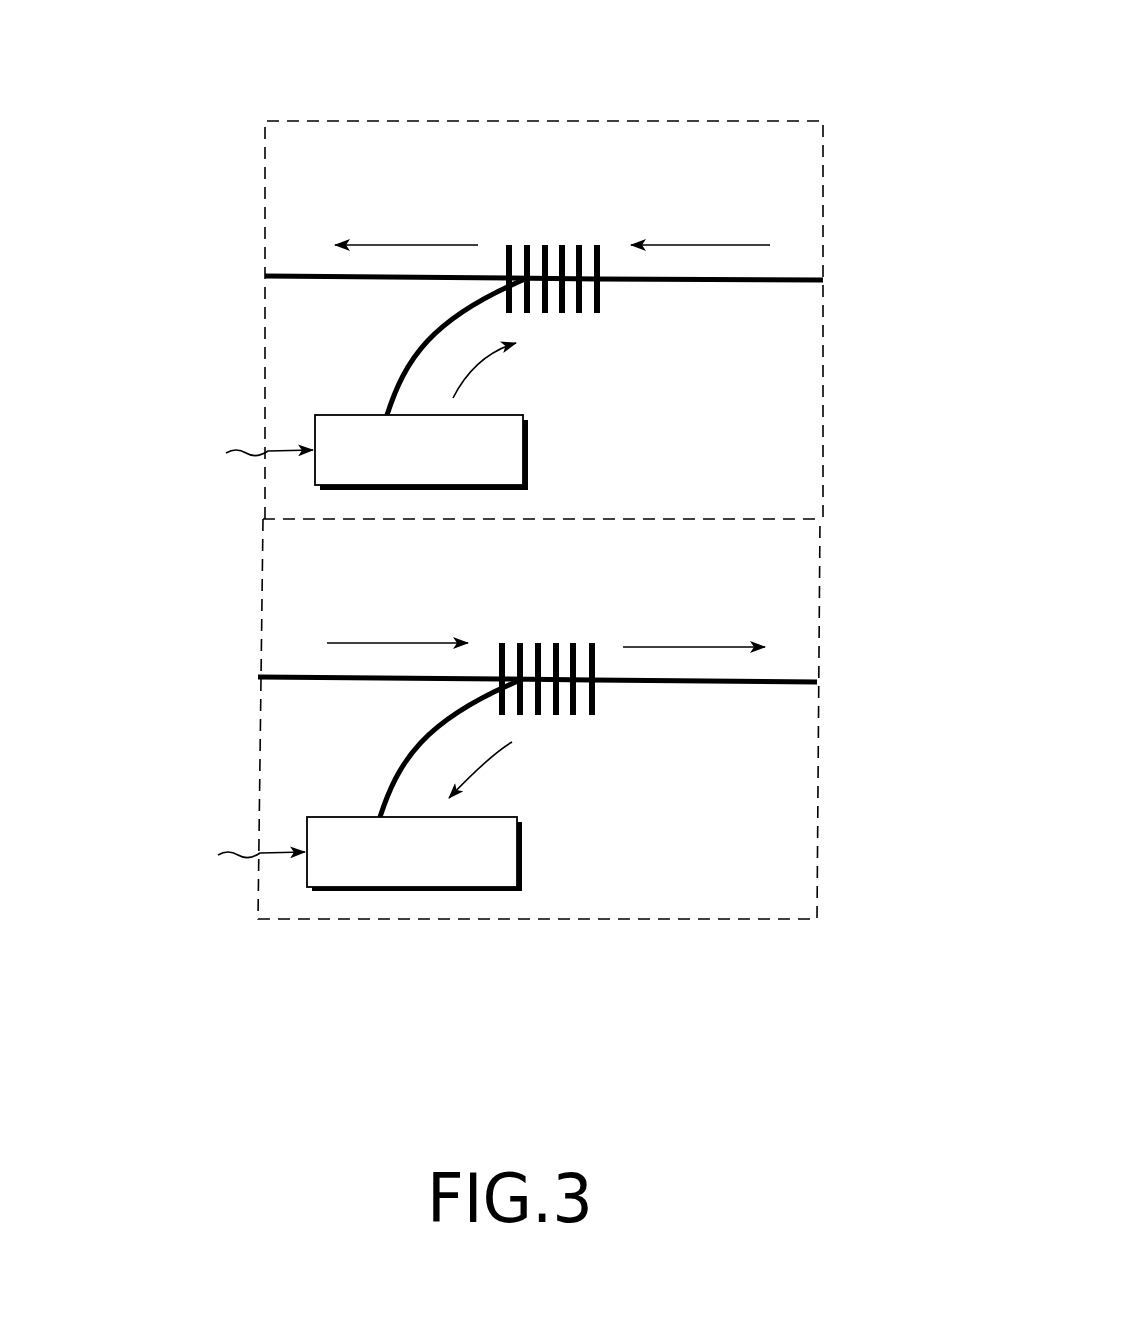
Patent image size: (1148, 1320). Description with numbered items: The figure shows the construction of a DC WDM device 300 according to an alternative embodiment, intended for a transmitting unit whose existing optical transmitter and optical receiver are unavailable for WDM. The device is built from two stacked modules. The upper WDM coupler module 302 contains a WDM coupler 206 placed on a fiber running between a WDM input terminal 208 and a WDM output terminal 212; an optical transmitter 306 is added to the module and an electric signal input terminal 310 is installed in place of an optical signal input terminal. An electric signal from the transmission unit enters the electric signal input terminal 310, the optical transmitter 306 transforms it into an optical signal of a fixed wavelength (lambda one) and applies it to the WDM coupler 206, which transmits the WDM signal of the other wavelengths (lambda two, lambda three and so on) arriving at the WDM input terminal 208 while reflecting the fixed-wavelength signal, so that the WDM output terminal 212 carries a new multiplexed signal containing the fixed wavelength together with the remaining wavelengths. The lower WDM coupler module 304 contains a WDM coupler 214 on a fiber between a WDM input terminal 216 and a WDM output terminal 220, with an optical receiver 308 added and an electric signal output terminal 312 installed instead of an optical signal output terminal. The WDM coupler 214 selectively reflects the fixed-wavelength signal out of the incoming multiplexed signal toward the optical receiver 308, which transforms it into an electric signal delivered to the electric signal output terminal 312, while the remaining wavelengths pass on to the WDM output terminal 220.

The DC WDM device 300 is at (737, 118).
The WDM coupler module 302 is at (340, 168).
The WDM coupler module 304 is at (335, 570).
The WDM coupler 206 is at (560, 245).
The WDM coupler 214 is at (555, 643).
The WDM output terminal 212 is at (265, 277).
The WDM input terminal 208 is at (823, 280).
The WDM input terminal 216 is at (258, 677).
The WDM output terminal 220 is at (817, 682).
The optical transmitter 306 is at (528, 450).
The optical receiver 308 is at (522, 852).
The electric signal input terminal 310 is at (242, 452).
The electric signal output terminal 312 is at (234, 856).